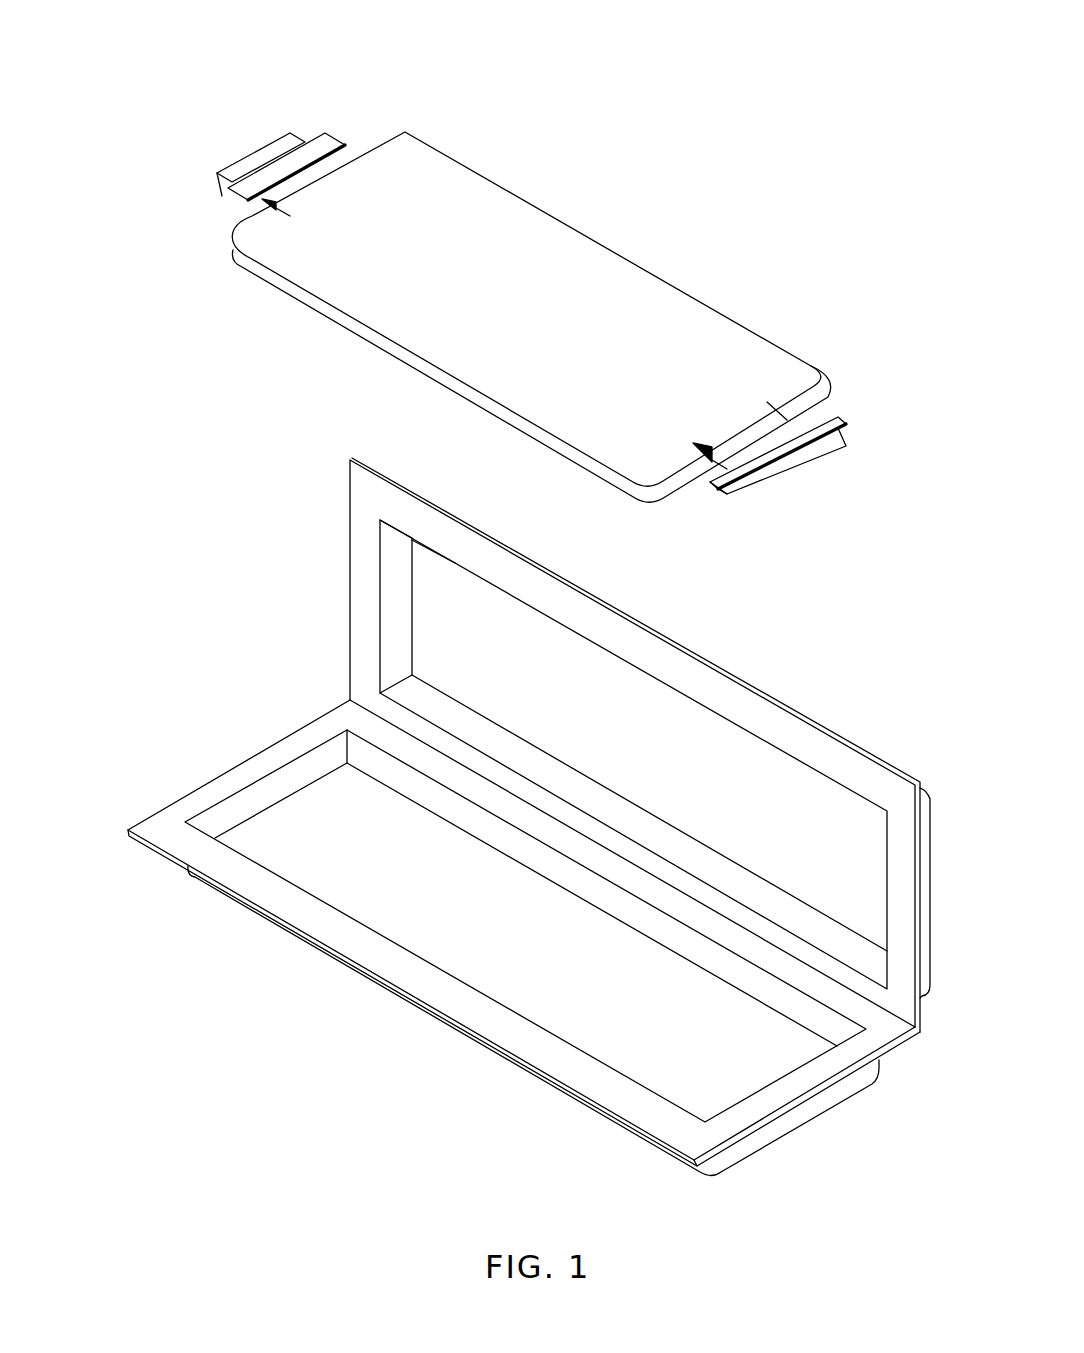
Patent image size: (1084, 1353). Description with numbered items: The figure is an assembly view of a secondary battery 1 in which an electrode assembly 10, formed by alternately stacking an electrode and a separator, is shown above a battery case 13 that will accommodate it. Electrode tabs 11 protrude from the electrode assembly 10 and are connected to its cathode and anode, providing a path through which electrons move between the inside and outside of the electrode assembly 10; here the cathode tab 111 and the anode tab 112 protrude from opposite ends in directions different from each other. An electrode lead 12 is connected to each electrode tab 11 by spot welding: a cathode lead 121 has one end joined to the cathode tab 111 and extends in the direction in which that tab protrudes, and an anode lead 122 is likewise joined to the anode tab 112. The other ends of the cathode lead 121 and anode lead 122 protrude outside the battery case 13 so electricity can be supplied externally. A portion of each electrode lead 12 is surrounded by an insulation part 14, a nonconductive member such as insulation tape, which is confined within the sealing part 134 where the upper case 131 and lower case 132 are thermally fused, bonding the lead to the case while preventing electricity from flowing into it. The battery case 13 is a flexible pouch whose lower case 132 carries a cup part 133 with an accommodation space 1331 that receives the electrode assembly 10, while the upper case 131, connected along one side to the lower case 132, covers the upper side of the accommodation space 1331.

The secondary battery 1 is at (160, 99).
The electrode assembly 10 is at (747, 184).
The electrode tab 11 is at (688, 161).
The cathode tab 111 is at (745, 428).
The anode tab 112 is at (313, 182).
The electrode lead 12 is at (373, 410).
The cathode lead 121 is at (805, 445).
The anode lead 122 is at (225, 200).
The insulation part 14 is at (325, 146).
The battery case 13 is at (112, 632).
The upper case 131 is at (393, 600).
The lower case 132 is at (173, 815).
The cup part 133 is at (795, 1122).
The accommodation space 1331 is at (656, 1058).
The sealing part 134 is at (507, 1033).